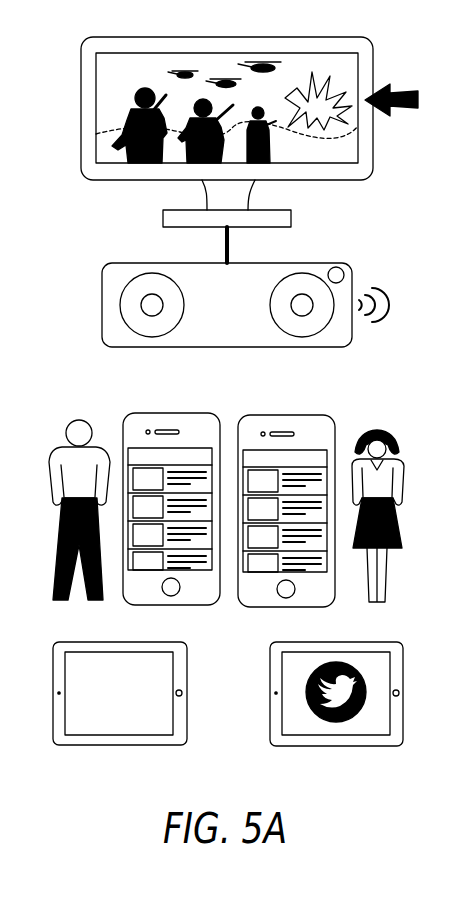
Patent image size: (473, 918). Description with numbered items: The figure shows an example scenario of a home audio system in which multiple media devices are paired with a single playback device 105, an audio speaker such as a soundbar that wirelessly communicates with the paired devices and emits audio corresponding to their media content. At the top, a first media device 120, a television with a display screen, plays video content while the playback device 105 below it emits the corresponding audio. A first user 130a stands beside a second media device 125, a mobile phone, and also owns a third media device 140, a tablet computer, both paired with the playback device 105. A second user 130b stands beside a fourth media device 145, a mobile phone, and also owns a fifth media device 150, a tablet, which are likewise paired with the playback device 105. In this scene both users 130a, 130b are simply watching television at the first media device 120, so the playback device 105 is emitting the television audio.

The first media device 120 is at (80, 54).
The playback device 105 is at (102, 283).
The first user 130a is at (66, 430).
The second media device 125 is at (160, 413).
The fourth media device 145 is at (296, 415).
The second user 130b is at (389, 433).
The third media device 140 is at (80, 746).
The fifth media device 150 is at (375, 746).